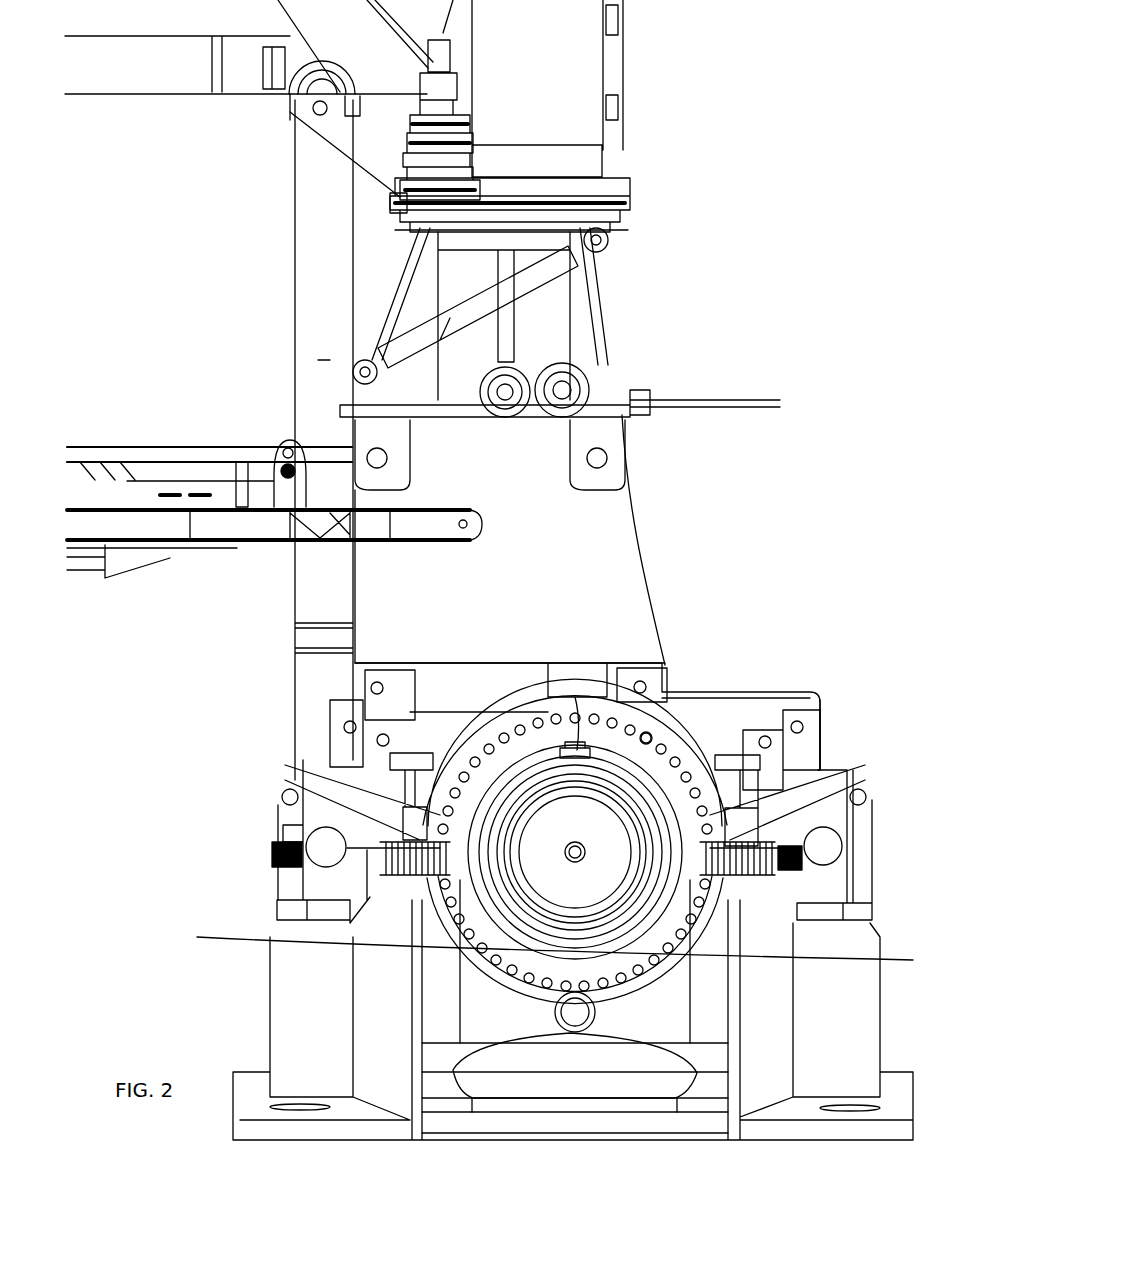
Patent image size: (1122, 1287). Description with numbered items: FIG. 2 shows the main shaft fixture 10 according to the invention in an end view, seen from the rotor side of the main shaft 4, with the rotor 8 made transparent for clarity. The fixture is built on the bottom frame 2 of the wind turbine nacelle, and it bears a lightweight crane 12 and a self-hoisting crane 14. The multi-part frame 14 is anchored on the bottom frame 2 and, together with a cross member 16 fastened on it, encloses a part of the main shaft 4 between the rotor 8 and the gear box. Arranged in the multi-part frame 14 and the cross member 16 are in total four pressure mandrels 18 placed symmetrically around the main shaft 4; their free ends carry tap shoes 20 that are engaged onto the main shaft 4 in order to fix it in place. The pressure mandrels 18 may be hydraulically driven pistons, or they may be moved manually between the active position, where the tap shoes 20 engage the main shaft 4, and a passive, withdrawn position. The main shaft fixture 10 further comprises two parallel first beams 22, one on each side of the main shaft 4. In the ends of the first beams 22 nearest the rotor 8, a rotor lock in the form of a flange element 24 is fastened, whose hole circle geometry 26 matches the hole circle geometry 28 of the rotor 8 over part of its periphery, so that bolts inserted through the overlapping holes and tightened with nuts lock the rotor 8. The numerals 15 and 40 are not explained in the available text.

The bottom frame 2 is at (880, 1022).
The main shaft 4 is at (584, 827).
The rotor 8 is at (541, 943).
The main shaft fixture 10 is at (808, 648).
The lightweight crane 12 is at (300, 567).
The multi-part frame 14 is at (708, 238).
The pivot pin 15 is at (585, 852).
The cross member 16 is at (818, 700).
The pressure mandrels 18 is at (290, 851).
The tap shoes 20 is at (540, 740).
The first beams 22 is at (397, 790).
The flange element 24 is at (440, 747).
The hole circle geometry 26 is at (707, 693).
The hole circle geometry 28 is at (650, 735).
The direction arrow 40 is at (262, 718).